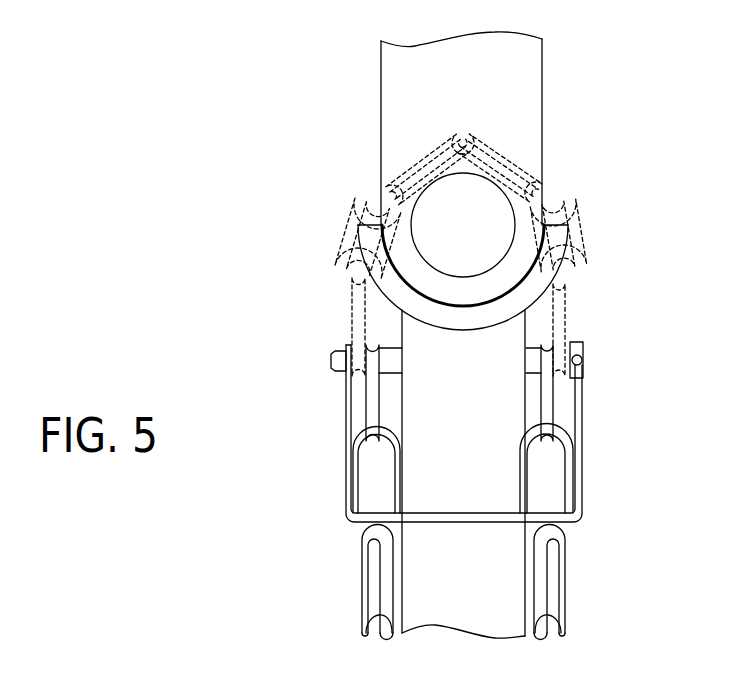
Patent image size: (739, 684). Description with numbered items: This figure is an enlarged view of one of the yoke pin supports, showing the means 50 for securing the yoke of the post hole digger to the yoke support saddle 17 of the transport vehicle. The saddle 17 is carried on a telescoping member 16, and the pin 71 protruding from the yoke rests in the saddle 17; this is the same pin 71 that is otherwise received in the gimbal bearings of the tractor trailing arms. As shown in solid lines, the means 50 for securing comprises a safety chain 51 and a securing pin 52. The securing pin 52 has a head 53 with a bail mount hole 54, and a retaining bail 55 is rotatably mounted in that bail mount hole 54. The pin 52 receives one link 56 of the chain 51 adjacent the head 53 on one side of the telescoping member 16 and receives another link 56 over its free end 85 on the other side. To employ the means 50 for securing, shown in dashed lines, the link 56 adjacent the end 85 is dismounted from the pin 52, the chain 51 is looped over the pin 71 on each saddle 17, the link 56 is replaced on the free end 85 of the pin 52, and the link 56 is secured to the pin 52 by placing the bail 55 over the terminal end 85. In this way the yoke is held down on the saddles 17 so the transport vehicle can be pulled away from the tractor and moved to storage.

The means for securing 50 is at (374, 335).
The telescoping member 16 is at (478, 441).
The yoke support saddle 17 is at (558, 232).
The safety chain 51 is at (356, 221).
The securing pin 52 is at (392, 358).
The head 53 is at (580, 342).
The bail mount hole 54 is at (582, 357).
The retaining bail 55 is at (577, 422).
The link 56 is at (373, 397).
The pin 71 is at (478, 247).
The free end 85 is at (332, 360).